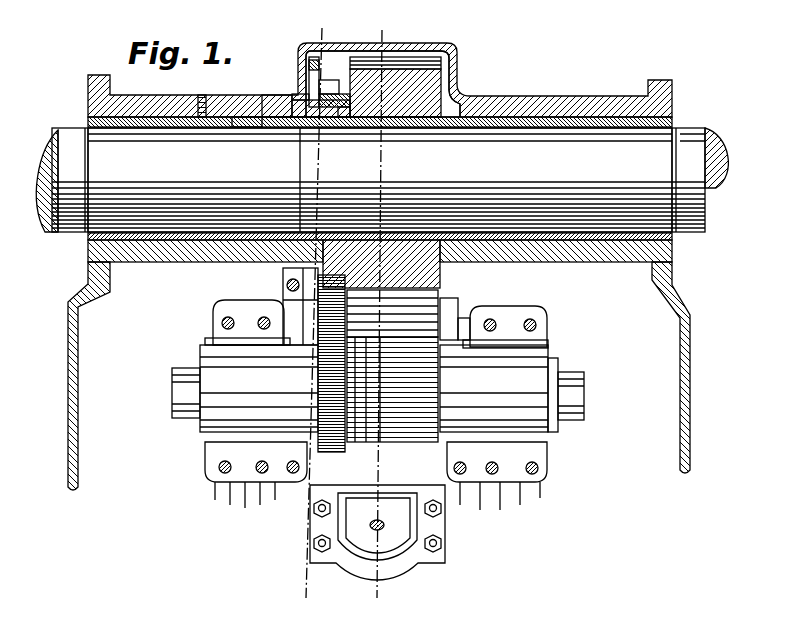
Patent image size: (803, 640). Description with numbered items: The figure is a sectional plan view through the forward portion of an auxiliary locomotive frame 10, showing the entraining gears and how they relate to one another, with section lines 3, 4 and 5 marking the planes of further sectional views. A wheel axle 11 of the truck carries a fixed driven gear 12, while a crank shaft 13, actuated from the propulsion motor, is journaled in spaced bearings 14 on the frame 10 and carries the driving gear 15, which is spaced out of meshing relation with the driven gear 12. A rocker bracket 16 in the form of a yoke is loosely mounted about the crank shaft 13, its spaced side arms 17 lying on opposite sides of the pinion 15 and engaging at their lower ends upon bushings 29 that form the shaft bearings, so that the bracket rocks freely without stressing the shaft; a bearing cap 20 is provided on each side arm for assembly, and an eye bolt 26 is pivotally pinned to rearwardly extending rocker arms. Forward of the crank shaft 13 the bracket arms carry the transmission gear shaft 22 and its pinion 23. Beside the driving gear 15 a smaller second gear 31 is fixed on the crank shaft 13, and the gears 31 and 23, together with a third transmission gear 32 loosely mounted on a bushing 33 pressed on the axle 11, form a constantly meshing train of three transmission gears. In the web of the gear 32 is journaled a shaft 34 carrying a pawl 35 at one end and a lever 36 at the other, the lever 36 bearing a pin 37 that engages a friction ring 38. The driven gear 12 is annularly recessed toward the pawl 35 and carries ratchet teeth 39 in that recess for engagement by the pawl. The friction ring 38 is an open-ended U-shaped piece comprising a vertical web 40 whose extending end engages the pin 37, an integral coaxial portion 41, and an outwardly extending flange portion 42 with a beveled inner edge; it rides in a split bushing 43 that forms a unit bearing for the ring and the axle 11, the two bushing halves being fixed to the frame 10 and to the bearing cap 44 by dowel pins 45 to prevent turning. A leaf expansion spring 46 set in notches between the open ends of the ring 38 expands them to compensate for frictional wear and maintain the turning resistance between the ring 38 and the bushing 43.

The section line 3- 3 is at (417, 33).
The section line 4- 4 is at (367, 35).
The section line 5- 5 is at (317, 17).
The frame 10 is at (690, 426).
The axle 11 is at (725, 178).
The driven gear 12 is at (432, 82).
The crank shaft 13 is at (556, 418).
The bearings 14 is at (542, 340).
The driving gear 15 is at (423, 400).
The rocker bracket 16 is at (312, 445).
The side arms 17 is at (376, 324).
The bearing cap 20 is at (270, 490).
The transmission gear shaft 22 is at (455, 312).
The pinion 23 is at (322, 225).
The eye bolt 26 is at (408, 563).
The bushings 29 is at (208, 427).
The second gear 31 is at (317, 452).
The third transmission gear 32 is at (368, 105).
The bushing 33 is at (367, 222).
The shaft 34 is at (310, 115).
The pawl 35 is at (425, 55).
The lever 36 is at (278, 97).
The pin 37 is at (297, 57).
The friction ring 38 is at (306, 78).
The ratchet teeth 39 is at (427, 222).
The vertical web 40 is at (312, 60).
The coaxial portion 41 is at (248, 125).
The flange portion 42 is at (213, 123).
The split bushing 43 is at (215, 232).
The bearing cap 44 is at (585, 98).
The dowel pins 45 is at (203, 110).
The leaf expansion spring 46 is at (213, 280).